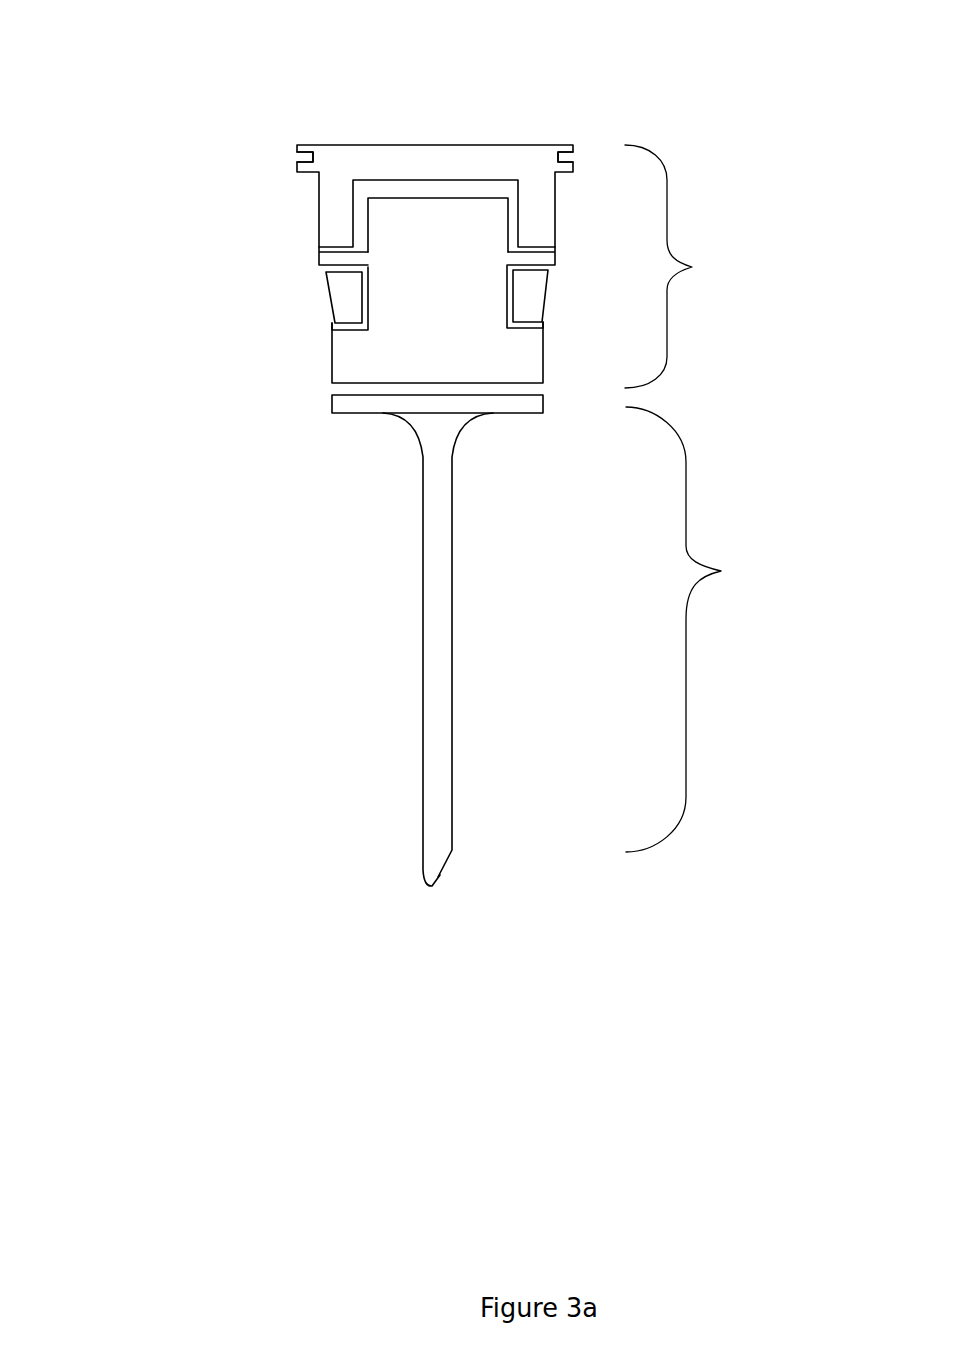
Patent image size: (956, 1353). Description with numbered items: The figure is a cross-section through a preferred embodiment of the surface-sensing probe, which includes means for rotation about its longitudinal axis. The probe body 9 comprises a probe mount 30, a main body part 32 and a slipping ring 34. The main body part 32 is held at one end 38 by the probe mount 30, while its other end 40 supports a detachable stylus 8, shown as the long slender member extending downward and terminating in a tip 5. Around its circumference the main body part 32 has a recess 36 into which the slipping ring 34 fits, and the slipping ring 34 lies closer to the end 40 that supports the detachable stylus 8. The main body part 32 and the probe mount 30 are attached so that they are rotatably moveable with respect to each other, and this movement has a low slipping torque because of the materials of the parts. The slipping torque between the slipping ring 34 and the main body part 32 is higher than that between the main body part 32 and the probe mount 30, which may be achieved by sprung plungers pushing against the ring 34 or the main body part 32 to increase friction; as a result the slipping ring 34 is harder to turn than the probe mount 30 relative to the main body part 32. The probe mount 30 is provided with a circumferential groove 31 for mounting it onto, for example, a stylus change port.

The needle 5 is at (447, 865).
The detachable stylus 8 is at (687, 629).
The probe body 9 is at (678, 266).
The probe mount 30 is at (328, 218).
The circumferential groove 31 is at (302, 147).
The main body part 32 is at (393, 287).
The slipping ring 34 is at (337, 280).
The recess 36 is at (350, 330).
The end of main body part 38 is at (425, 213).
The end of main body part 40 is at (386, 363).